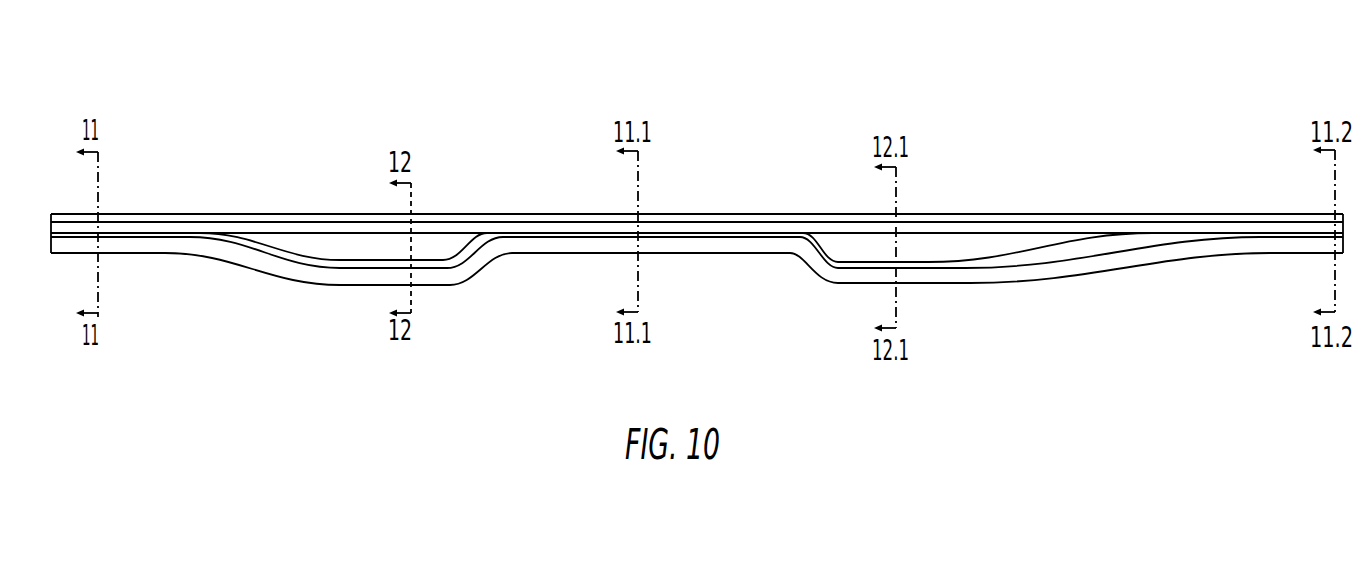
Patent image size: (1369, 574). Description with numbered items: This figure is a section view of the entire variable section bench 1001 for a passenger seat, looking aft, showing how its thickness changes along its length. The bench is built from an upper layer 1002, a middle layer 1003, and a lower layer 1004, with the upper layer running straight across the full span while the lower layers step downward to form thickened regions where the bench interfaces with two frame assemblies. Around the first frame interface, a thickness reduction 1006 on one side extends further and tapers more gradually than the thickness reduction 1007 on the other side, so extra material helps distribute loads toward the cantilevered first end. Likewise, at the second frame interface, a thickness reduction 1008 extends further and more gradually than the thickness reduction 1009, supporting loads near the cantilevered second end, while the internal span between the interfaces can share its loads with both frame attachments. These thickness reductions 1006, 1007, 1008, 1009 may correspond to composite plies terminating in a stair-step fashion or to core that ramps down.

The variable section bench 1001 is at (1163, 80).
The upper layer 1002 is at (1087, 216).
The middle layer 1003 is at (966, 247).
The lower layer 1004 is at (1300, 245).
The thickness reduction 1006 is at (354, 248).
The thickness reduction 1007 is at (430, 250).
The thickness reduction 1008 is at (1073, 241).
The thickness reduction 1009 is at (859, 248).